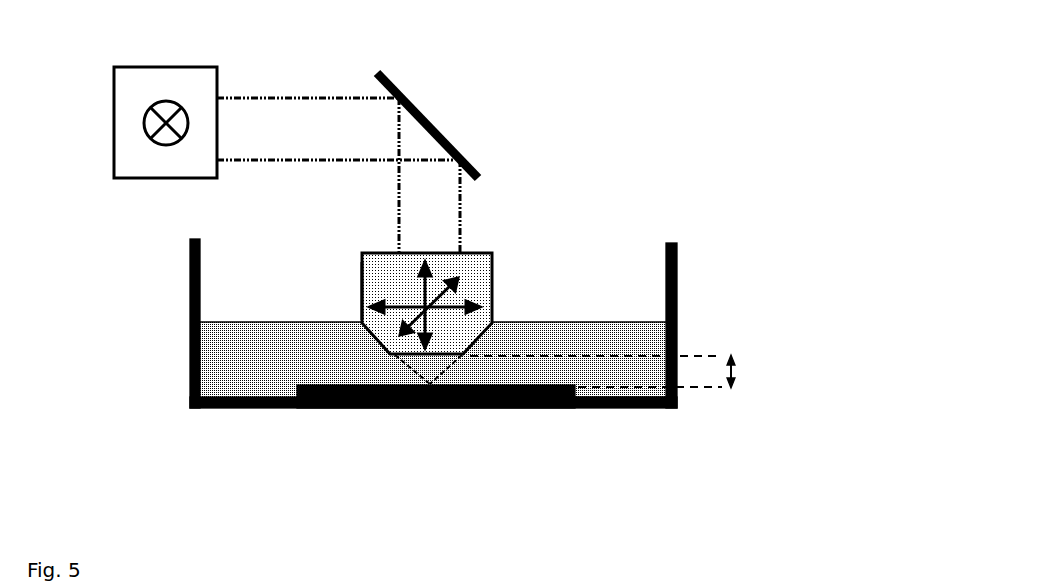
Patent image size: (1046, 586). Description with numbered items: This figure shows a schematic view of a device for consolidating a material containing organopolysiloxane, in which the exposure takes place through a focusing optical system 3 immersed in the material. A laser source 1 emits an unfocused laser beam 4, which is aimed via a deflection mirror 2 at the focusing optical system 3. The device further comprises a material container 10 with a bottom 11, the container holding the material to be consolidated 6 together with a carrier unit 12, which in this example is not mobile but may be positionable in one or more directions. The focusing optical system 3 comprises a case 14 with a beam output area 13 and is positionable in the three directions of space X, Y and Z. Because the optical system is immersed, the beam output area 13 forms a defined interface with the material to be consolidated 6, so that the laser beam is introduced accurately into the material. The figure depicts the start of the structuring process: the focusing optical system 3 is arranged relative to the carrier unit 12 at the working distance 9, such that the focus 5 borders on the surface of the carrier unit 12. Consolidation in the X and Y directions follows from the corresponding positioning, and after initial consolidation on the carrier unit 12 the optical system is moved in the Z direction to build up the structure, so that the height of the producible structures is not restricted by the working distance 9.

The laser source 1 is at (142, 158).
The deflection mirror 2 is at (445, 135).
The focusing optical system 3 is at (475, 270).
The unfocused laser beam 4 is at (300, 128).
The focus 5 is at (428, 410).
The material to be consolidated 6 is at (240, 363).
The working distance 9 is at (615, 372).
The material container 10 is at (178, 317).
The bottom 11 is at (598, 410).
The carrier unit 12 is at (332, 410).
The beam output area 13 is at (407, 360).
The case 14 is at (362, 280).